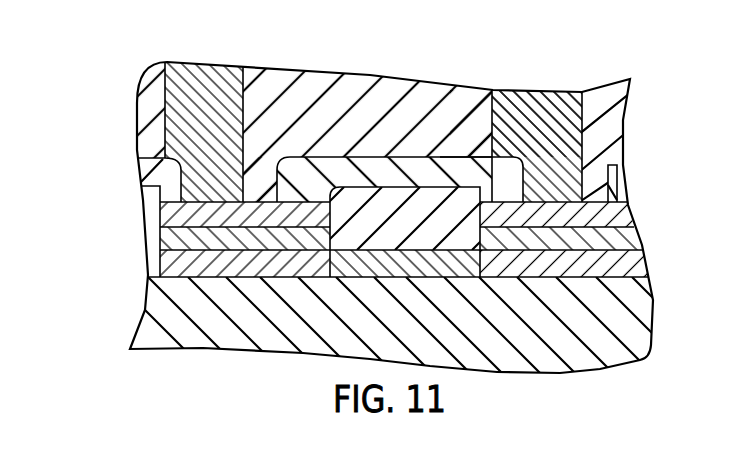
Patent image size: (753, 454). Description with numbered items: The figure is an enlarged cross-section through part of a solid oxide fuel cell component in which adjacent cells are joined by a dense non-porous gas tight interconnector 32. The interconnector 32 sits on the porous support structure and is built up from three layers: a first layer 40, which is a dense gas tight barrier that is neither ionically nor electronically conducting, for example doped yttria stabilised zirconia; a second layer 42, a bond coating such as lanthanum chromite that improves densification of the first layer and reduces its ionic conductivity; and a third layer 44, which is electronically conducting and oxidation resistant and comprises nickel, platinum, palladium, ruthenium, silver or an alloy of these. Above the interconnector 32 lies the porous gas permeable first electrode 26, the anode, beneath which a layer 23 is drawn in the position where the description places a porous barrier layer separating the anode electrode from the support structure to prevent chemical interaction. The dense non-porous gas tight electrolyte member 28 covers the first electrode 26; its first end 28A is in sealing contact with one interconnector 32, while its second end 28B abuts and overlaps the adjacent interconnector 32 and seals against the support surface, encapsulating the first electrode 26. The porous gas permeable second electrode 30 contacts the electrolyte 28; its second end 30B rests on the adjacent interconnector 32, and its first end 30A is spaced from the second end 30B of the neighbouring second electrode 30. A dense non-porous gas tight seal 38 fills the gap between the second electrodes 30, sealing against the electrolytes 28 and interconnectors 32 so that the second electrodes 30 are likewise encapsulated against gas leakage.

The insulating layer 23 is at (342, 272).
The porous gas permeable first electrode 26 is at (422, 237).
The dense non-porous gas tight electrolyte member 28 is at (388, 172).
The first end of electrolyte 28A is at (505, 182).
The second end of electrolyte 28B is at (288, 165).
The porous gas permeable second electrode 30 is at (417, 100).
The first end of second electrode 30A is at (475, 148).
The second end of second electrode 30B is at (255, 190).
The dense non-porous gas tight interconnector 32 is at (238, 284).
The dense non-porous gas tight seal 38 is at (567, 108).
The first layer 40 is at (642, 268).
The second layer 42 is at (631, 243).
The third layer 44 is at (627, 217).